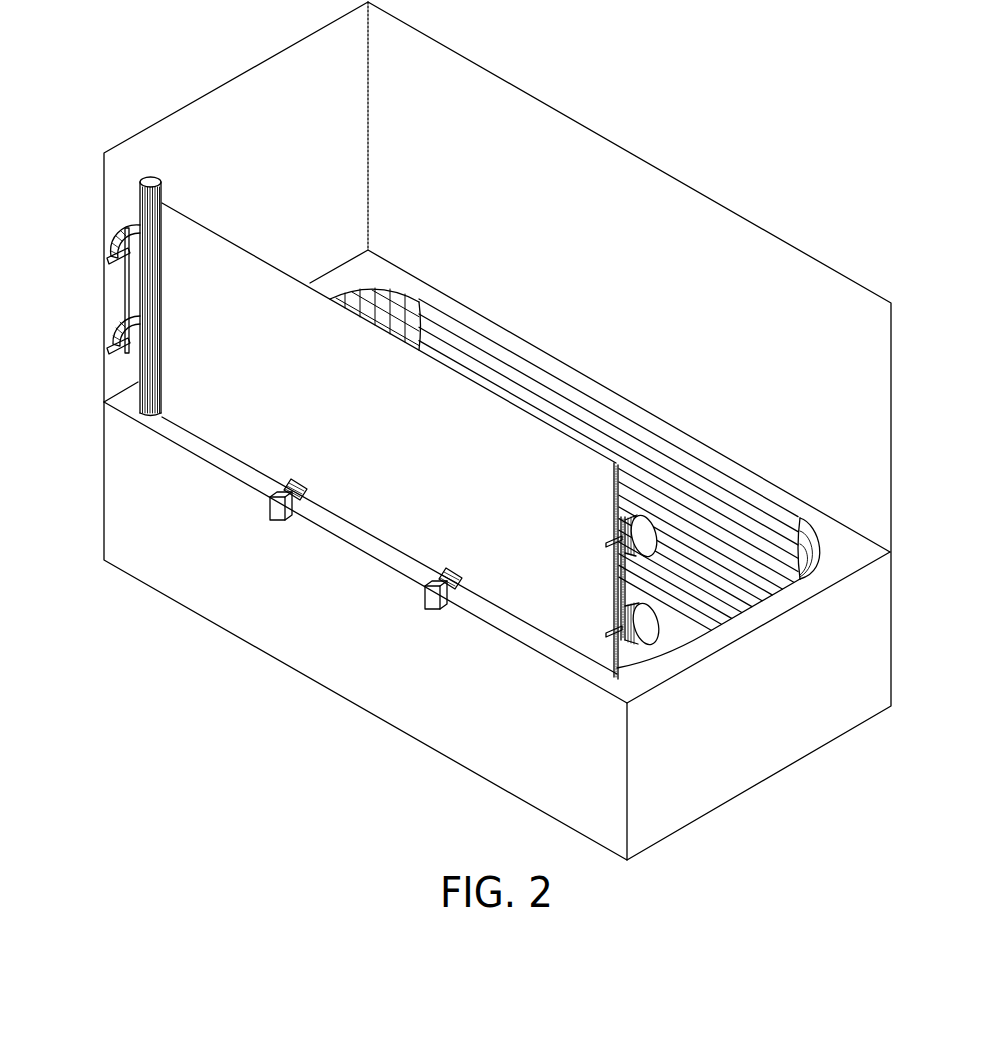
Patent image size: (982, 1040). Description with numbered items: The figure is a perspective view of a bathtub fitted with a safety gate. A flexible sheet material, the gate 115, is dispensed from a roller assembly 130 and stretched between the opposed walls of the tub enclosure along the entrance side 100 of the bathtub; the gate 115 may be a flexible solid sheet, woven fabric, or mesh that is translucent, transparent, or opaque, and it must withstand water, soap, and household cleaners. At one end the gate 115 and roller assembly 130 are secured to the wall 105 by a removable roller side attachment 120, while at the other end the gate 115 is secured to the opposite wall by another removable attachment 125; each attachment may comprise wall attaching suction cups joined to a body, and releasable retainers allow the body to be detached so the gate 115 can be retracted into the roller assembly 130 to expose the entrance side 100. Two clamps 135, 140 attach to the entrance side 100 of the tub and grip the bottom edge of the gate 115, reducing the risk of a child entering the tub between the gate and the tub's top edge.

The entrance side 100 is at (323, 647).
The wall 105 is at (207, 93).
The flexible sheet material (gate) 115 is at (235, 412).
The roller side attachment 120 is at (132, 292).
The attachment 125 is at (636, 593).
The roller assembly 130 is at (139, 203).
The clamp 135 is at (272, 513).
The clamp 140 is at (434, 598).